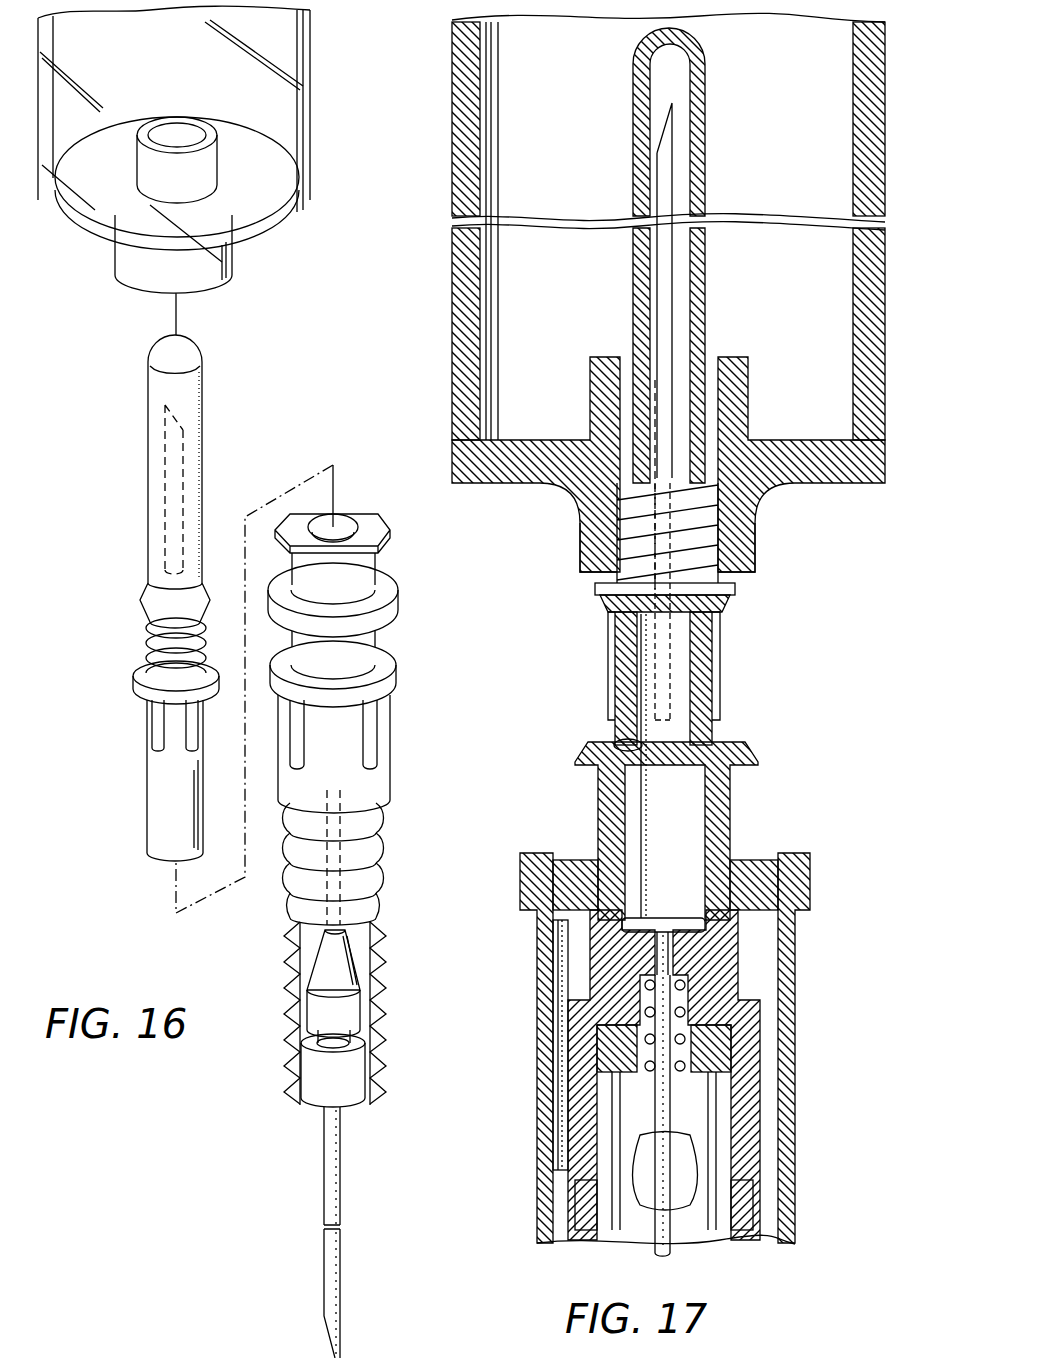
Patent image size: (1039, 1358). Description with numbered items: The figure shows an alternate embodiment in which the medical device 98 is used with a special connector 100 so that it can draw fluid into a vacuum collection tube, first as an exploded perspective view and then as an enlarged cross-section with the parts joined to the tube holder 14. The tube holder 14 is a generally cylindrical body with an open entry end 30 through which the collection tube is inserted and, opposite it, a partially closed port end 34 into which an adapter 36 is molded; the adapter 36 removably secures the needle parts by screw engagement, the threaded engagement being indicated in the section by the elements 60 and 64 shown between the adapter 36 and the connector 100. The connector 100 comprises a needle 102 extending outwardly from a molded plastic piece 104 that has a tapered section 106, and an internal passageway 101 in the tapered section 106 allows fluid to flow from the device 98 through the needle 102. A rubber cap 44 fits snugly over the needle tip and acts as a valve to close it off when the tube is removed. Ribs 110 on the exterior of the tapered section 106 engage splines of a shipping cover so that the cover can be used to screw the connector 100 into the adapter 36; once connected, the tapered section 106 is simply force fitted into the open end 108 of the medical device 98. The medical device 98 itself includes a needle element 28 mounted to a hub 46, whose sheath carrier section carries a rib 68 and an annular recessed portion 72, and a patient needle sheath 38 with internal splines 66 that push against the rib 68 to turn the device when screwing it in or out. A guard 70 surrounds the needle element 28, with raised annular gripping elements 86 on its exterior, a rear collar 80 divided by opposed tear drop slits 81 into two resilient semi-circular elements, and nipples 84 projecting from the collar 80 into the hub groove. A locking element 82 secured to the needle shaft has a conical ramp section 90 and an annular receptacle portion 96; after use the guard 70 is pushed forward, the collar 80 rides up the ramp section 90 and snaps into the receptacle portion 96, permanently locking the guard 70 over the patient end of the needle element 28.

In FIG. 16, the tube holder 14 is at (318, 50).
In FIG. 17, the tube holder 14 is at (452, 345).
In FIG. 16, the needle element 28 is at (320, 1247).
In FIG. 17, the needle element 28 is at (650, 1232).
In FIG. 17, the open entry end 30 is at (498, 115).
In FIG. 16, the partially closed port end 34 is at (88, 245).
In FIG. 17, the partially closed port end 34 is at (858, 480).
In FIG. 16, the adapter 36 is at (140, 293).
In FIG. 17, the adapter 36 is at (583, 548).
In FIG. 17, the patient needle sheath 38 is at (797, 1085).
In FIG. 16, the rubber cap 44 is at (148, 397).
In FIG. 17, the rubber cap 44 is at (706, 158).
In FIG. 16, the hub 46 is at (388, 647).
In FIG. 17, the hub 46 is at (735, 810).
In FIG. 17, the thread 60 is at (612, 525).
In FIG. 17, the thread 64 is at (716, 550).
In FIG. 17, the internal splines 66 is at (566, 1085).
In FIG. 16, the rib 68 is at (372, 736).
In FIG. 16, the guard 70 is at (283, 1083).
In FIG. 17, the guard 70 is at (729, 1128).
In FIG. 17, the annular recessed portion 72 is at (622, 1138).
In FIG. 17, the collar 80 is at (605, 1110).
In FIG. 17, the tear drop slits 81 is at (690, 1200).
In FIG. 16, the locking element 82 is at (345, 962).
In FIG. 17, the nipples 84 is at (596, 1205).
In FIG. 16, the raised annular gripping elements 86 is at (380, 848).
In FIG. 16, the ramp section 90 is at (322, 970).
In FIG. 16, the annular receptacle portion 96 is at (345, 1005).
In FIG. 16, the medical device 98 is at (281, 879).
In FIG. 17, the medical device 98 is at (536, 1234).
In FIG. 16, the connector 100 is at (138, 648).
In FIG. 17, the connector 100 is at (750, 677).
In FIG. 17, the internal passageway 101 is at (652, 812).
In FIG. 16, the needle 102 is at (165, 515).
In FIG. 17, the needle 102 is at (660, 293).
In FIG. 16, the molded plastic piece 104 is at (135, 677).
In FIG. 17, the molded plastic piece 104 is at (736, 598).
In FIG. 16, the tapered section 106 is at (150, 813).
In FIG. 17, the tapered section 106 is at (700, 733).
In FIG. 16, the open end 108 is at (345, 520).
In FIG. 17, the open end 108 is at (616, 738).
In FIG. 16, the ribs 110 is at (157, 717).